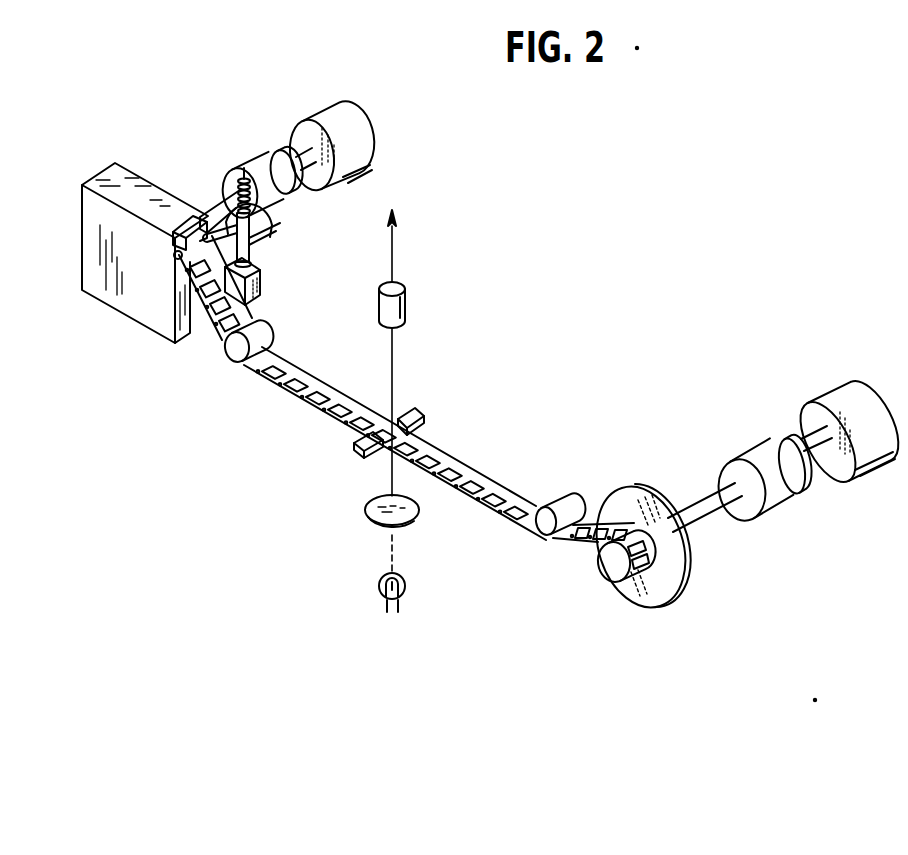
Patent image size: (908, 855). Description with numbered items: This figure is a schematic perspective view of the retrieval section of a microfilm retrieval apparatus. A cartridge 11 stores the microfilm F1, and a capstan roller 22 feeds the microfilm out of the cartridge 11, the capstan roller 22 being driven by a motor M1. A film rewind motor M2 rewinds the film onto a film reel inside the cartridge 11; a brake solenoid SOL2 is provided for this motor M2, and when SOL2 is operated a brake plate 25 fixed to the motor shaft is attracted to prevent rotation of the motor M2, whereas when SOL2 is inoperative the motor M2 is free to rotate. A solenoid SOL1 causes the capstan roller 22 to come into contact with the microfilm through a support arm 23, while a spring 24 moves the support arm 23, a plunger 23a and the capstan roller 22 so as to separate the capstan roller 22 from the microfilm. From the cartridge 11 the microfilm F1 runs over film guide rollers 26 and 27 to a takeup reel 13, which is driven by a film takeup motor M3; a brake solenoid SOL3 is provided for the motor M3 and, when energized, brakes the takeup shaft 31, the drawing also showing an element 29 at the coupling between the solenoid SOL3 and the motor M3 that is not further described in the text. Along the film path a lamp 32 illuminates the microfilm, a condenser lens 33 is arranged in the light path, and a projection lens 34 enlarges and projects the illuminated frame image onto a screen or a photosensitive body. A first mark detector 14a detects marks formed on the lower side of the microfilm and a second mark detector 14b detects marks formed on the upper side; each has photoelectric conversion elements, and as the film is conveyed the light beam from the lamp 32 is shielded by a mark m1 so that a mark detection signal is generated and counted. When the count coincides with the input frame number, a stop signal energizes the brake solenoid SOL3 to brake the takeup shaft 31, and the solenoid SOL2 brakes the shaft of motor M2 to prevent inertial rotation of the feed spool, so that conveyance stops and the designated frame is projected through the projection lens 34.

The cartridge 11 is at (121, 180).
The capstan roller 22 is at (177, 262).
The support arm 23 is at (253, 240).
The plunger 23a is at (263, 265).
The spring 24 is at (238, 190).
The brake plate 25 is at (274, 148).
The film guide roller 26 is at (234, 352).
The film guide roller 27 is at (563, 502).
The coupling flange 29 is at (803, 492).
The takeup shaft 31 is at (690, 492).
The lamp 32 is at (381, 588).
The condenser lens 33 is at (370, 523).
The projection lens 34 is at (405, 308).
The takeup reel 13 is at (668, 585).
The first mark detector 14a is at (362, 446).
The second mark detector 14b is at (422, 416).
The microfilm F1 is at (487, 468).
The motor M1 is at (273, 223).
The film rewind motor M2 is at (364, 122).
The film takeup motor M3 is at (856, 388).
The solenoid SOL1 is at (263, 290).
The brake solenoid SOL2 is at (257, 170).
The brake solenoid SOL3 is at (756, 462).
The mark m1 is at (501, 521).